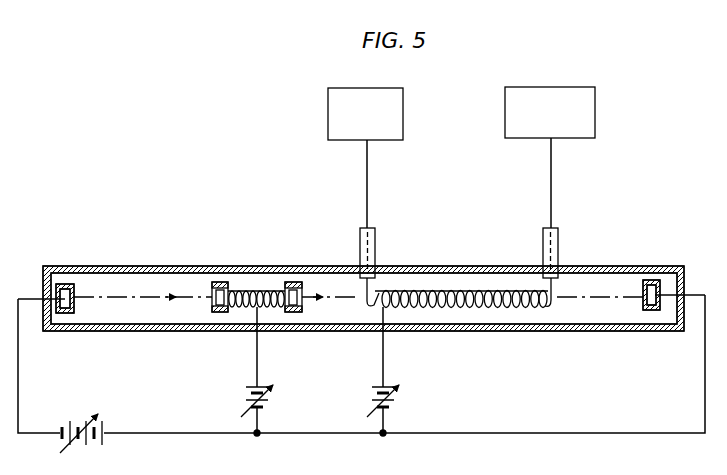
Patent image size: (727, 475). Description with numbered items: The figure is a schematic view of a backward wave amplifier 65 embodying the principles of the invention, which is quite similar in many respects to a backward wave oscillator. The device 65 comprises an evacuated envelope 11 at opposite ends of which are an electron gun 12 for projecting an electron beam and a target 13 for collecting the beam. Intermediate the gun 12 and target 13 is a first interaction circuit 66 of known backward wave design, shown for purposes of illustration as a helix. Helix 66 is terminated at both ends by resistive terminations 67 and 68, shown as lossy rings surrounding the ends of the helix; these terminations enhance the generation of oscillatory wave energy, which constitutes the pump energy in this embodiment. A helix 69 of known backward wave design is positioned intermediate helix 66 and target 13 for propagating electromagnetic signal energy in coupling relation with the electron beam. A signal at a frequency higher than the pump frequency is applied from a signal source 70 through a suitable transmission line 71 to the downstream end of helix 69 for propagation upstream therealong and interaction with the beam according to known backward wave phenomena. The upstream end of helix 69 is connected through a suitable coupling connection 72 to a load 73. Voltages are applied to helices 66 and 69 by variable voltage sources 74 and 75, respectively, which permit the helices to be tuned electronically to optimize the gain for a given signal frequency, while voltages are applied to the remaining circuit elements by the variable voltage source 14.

The evacuated envelope 11 is at (125, 331).
The electron gun 12 is at (66, 314).
The target 13 is at (651, 312).
The variable voltage source 14 is at (78, 422).
The backward wave amplifier 65 is at (480, 355).
The first interaction circuit 66 is at (265, 290).
The resistive termination 67 is at (218, 313).
The resistive termination 68 is at (289, 313).
The helix 69 is at (457, 290).
The signal source 70 is at (595, 100).
The transmission line 71 is at (560, 240).
The coupling connection 72 is at (378, 244).
The load 73 is at (402, 103).
The variable voltage source 74 is at (272, 397).
The variable voltage source 75 is at (397, 397).